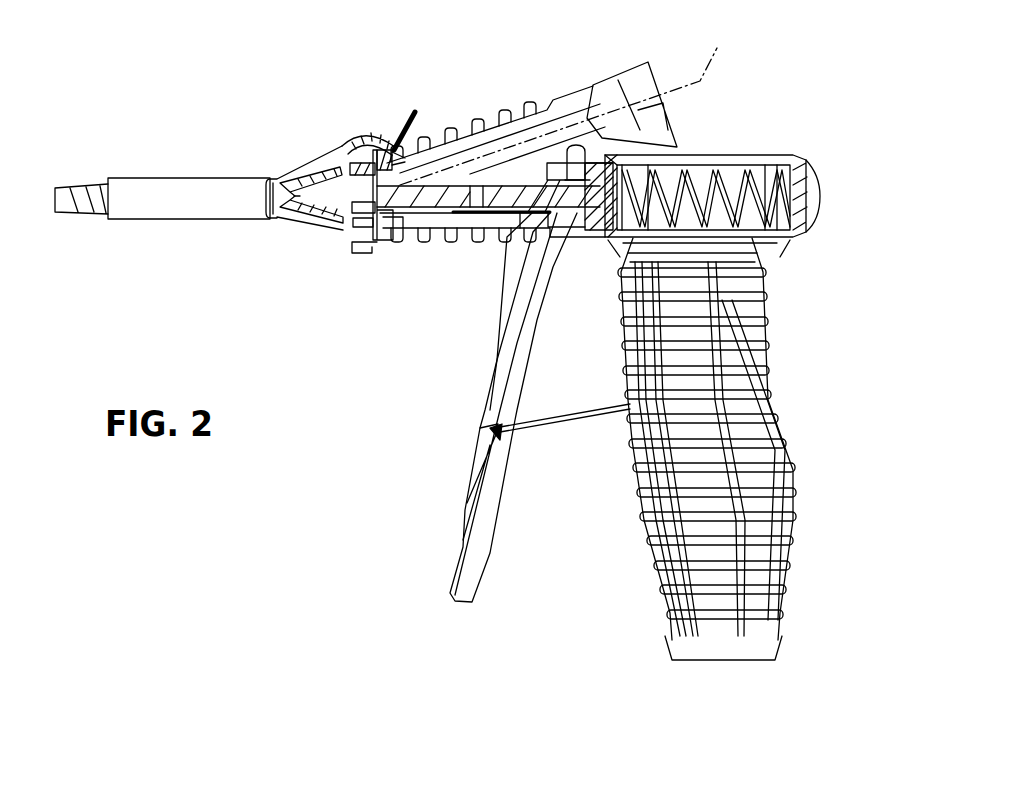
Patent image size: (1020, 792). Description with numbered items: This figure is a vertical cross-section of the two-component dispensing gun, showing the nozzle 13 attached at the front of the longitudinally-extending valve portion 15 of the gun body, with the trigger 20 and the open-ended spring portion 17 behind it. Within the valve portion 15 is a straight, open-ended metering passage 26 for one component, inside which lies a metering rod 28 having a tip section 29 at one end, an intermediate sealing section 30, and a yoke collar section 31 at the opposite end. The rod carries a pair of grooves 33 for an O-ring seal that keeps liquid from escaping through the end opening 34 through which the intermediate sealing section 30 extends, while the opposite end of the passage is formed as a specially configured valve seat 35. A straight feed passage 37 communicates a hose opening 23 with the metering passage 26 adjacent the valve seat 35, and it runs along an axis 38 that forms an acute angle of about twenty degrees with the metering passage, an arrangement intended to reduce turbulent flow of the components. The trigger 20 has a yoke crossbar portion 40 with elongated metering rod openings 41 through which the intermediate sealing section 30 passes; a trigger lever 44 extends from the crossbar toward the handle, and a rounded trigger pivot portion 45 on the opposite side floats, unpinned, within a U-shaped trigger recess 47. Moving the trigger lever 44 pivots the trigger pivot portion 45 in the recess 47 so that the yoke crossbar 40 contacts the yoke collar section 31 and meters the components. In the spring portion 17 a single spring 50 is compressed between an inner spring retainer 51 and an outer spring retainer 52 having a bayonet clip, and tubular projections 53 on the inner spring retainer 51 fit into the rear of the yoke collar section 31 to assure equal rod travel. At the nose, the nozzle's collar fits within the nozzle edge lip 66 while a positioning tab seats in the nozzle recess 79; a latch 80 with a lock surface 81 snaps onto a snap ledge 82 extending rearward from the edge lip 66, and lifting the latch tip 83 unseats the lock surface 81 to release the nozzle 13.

The nozzle 13 is at (190, 222).
The valve portion 15 is at (430, 280).
The spring portion 17 is at (773, 247).
The trigger 20 is at (460, 478).
The hose opening 23 is at (638, 70).
The metering passage 26 is at (430, 228).
The metering rod 28 is at (452, 243).
The tip section 29 is at (343, 222).
The intermediate sealing section 30 is at (510, 187).
The yoke collar section 31 is at (587, 214).
The grooves 33 is at (519, 187).
The end opening 34 is at (522, 220).
The valve seat 35 is at (333, 170).
The feed passage 37 is at (560, 140).
The axis 38 is at (565, 101).
The yoke crossbar portion 40 is at (655, 170).
The metering rod openings 41 is at (620, 175).
The trigger lever 44 is at (493, 547).
The trigger pivot portion 45 is at (635, 138).
The trigger recess 47 is at (578, 142).
The spring 50 is at (782, 160).
The inner spring retainer 51 is at (620, 247).
The outer spring retainer 52 is at (815, 168).
The tubular projections 53 is at (615, 212).
The nozzle edge lip 66 is at (340, 141).
The nozzle recess 79 is at (360, 254).
The latch 80 is at (342, 165).
The lock surface 81 is at (372, 140).
The snap ledge 82 is at (398, 150).
The latch tip 83 is at (410, 112).